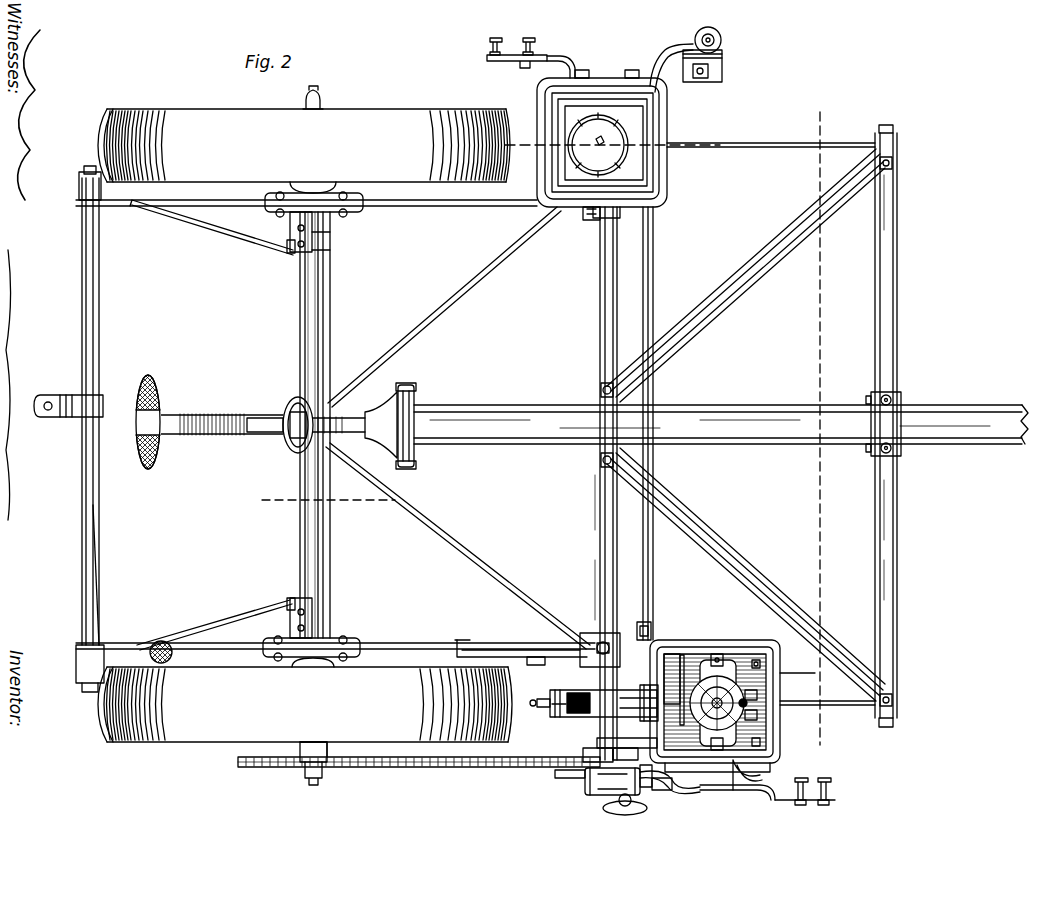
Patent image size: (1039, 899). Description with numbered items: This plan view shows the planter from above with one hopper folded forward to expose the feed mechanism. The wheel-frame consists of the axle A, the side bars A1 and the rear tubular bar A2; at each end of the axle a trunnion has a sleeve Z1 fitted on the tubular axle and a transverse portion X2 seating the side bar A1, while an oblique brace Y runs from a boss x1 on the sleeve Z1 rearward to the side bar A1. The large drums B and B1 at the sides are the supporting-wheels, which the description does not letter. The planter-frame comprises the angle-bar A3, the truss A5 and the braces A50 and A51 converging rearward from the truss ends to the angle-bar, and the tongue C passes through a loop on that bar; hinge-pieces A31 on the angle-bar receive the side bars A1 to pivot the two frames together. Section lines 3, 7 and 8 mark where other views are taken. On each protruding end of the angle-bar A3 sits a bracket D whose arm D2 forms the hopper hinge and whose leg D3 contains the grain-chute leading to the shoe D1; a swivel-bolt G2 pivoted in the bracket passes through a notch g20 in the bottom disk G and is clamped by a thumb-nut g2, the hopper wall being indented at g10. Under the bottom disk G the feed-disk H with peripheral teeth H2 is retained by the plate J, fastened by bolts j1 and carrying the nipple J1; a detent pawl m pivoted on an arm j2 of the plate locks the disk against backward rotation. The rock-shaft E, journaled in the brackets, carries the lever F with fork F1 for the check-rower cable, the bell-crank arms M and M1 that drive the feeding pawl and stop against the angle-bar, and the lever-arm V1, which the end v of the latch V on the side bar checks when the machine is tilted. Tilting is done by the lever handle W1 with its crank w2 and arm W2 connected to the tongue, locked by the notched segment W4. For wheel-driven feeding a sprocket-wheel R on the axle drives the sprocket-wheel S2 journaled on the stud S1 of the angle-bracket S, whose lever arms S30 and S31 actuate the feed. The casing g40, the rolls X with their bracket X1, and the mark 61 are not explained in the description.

The upper cylinder B is at (304, 139).
The lower cylinder B1 is at (305, 700).
The side bar A1 is at (486, 204).
The rear tubular bar A2 is at (95, 363).
The axle A is at (325, 293).
The brace Y is at (198, 232).
The transverse extending portion X2 is at (282, 206).
The boss x1 is at (293, 250).
The sleeve Z1 is at (330, 240).
The angle-bar A3 is at (600, 350).
The hinge-piece A31 is at (597, 209).
The rock-shaft E is at (652, 298).
The brace A50 is at (736, 277).
The brace A51 is at (718, 303).
The truss A5 is at (880, 342).
The shoe D1 is at (793, 136).
The section line 8 is at (815, 419).
The section line 3 is at (613, 149).
The gear casing g40 is at (598, 108).
The indented portion of hopper wall g10 is at (627, 120).
The spool X is at (527, 39).
The spool bracket X1 is at (549, 57).
The lever F is at (690, 38).
The fork F1 is at (706, 34).
The tongue C is at (768, 396).
The handle W1 is at (285, 437).
The notched segment W4 is at (323, 448).
The crank w2 is at (330, 408).
The lever-arm W2 is at (402, 403).
The section line 7 is at (319, 501).
The latch V is at (507, 643).
The end of latch v is at (463, 641).
The lever-arm V1 is at (648, 630).
The feed-disk H is at (773, 690).
The peripheral teeth H2 is at (751, 670).
The detent pawl m is at (678, 648).
The arm j2 is at (684, 656).
The bolt j1 is at (719, 655).
The bottom disk G is at (804, 681).
The spout or nipple J1 is at (768, 708).
The notch g20 is at (770, 731).
The plate J is at (777, 754).
The thumb-nut g2 is at (537, 700).
The bracket D is at (603, 703).
The arm D2 is at (653, 691).
The swivel-bolt G2 is at (543, 711).
The leg D3 is at (577, 722).
The sprocket-wheel S2 is at (598, 758).
The lever-arm M1 is at (625, 748).
The angle-bracket S is at (612, 768).
The lever-arm S30 is at (578, 778).
The stud S1 is at (600, 795).
The lever-arm S31 is at (612, 790).
The lever-arm M is at (655, 793).
The sprocket-wheel R is at (300, 764).
The rack bracket 61 is at (328, 758).